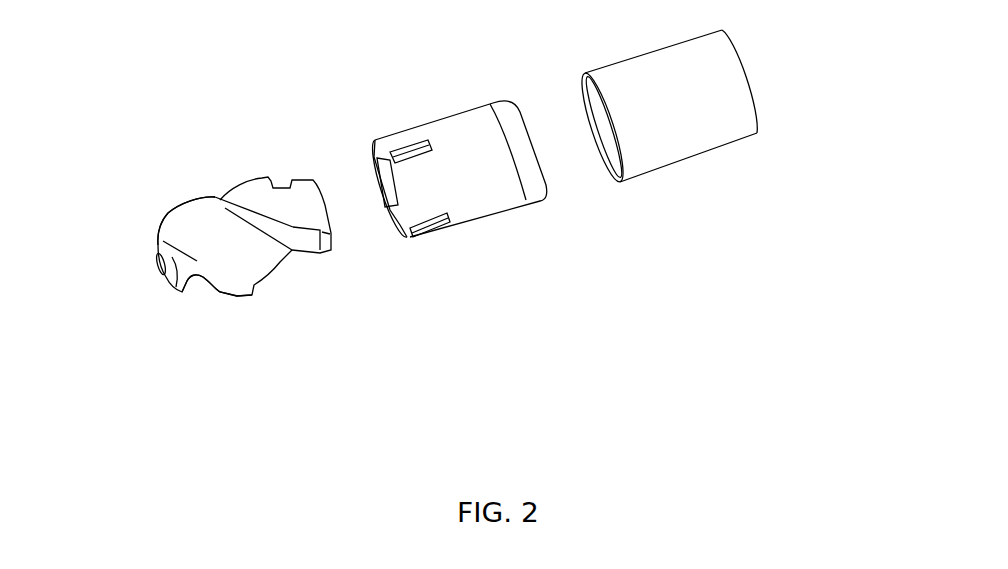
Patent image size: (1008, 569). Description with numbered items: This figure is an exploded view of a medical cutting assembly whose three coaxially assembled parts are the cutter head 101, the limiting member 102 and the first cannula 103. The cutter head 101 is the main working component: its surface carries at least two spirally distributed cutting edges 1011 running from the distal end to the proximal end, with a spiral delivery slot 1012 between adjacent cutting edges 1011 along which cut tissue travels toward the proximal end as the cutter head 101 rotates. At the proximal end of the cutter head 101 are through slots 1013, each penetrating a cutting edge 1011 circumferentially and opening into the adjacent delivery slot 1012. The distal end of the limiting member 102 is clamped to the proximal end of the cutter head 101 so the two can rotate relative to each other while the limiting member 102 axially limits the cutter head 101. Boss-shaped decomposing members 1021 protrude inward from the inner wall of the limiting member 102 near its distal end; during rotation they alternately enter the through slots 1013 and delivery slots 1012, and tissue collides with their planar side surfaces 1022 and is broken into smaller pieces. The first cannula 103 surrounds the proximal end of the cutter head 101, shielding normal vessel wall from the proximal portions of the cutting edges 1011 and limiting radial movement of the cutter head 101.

The cutter head 101 is at (250, 293).
The cutting edge 1011 is at (203, 198).
The delivery slot 1012 is at (220, 245).
The through slot 1013 is at (286, 178).
The limiting member 102 is at (480, 190).
The decomposing member 1021 is at (403, 225).
The side surface 1022 is at (390, 155).
The first cannula 103 is at (682, 123).